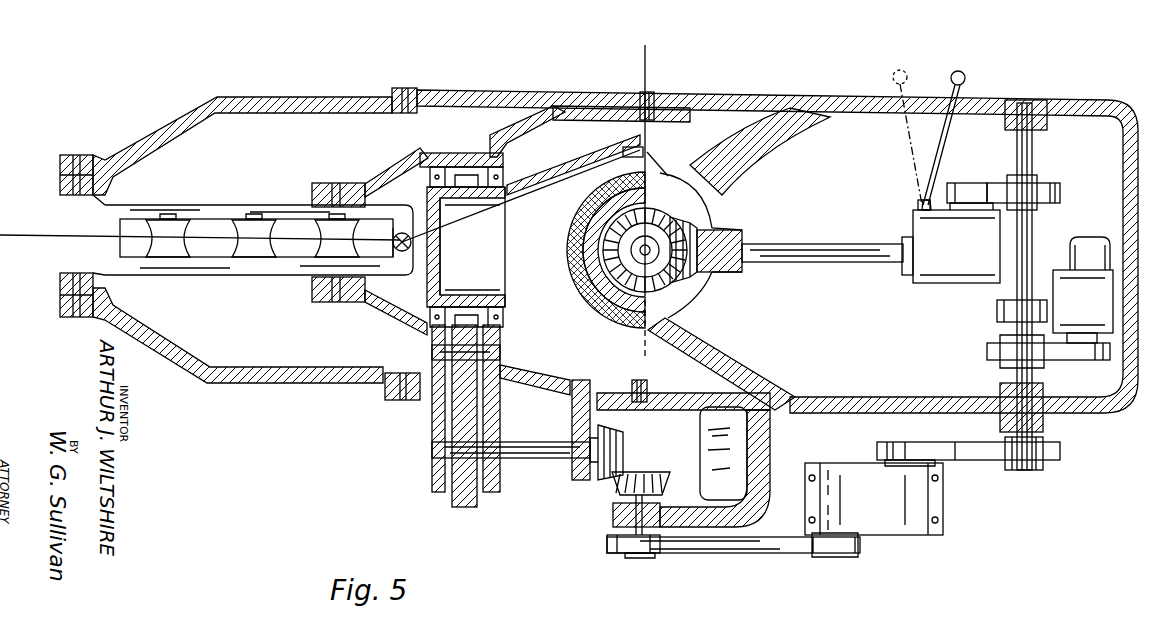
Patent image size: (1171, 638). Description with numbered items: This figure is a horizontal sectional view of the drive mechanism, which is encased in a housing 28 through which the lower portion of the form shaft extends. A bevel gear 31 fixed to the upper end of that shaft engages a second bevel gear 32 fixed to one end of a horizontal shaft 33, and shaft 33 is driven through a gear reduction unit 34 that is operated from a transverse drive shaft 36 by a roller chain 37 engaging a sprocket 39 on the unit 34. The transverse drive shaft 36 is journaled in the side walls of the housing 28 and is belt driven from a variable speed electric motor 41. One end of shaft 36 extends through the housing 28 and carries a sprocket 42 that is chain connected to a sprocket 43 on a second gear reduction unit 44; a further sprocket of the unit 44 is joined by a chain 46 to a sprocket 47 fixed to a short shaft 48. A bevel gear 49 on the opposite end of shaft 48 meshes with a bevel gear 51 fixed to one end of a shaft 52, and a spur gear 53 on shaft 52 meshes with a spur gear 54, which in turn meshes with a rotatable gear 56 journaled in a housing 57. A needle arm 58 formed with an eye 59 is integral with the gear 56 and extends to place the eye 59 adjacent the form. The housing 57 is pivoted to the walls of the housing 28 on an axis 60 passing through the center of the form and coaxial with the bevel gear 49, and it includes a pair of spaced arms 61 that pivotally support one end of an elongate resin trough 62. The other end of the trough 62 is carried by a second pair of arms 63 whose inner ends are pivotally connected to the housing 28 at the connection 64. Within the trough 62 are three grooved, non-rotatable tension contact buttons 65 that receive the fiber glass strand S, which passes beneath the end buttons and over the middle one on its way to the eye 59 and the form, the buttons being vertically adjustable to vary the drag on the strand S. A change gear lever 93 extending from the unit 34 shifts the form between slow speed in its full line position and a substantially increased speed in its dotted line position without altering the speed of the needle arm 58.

The fiber glass strand S is at (60, 236).
The housing 28 is at (808, 97).
The bevel gear 31 is at (690, 215).
The second bevel gear 32 is at (693, 228).
The horizontal shaft 33 is at (825, 260).
The gear reduction unit 34 is at (945, 268).
The transverse drive shaft 36 is at (1033, 237).
The roller chain 37 is at (995, 184).
The sprocket 39 is at (968, 184).
The variable speed electric motor 41 is at (1118, 310).
The sprocket 42 is at (1043, 462).
The sprocket 43 is at (918, 443).
The gear reduction unit 44 is at (850, 470).
The chain 46 is at (780, 553).
The sprocket 47 is at (660, 556).
The short shaft 48 is at (613, 523).
The bevel gear 49 is at (658, 475).
The bevel gear 51 is at (624, 452).
The shaft 52 is at (550, 446).
The spur gear 53 is at (465, 508).
The spur gear 54 is at (485, 352).
The rotatable gear 56 is at (472, 155).
The housing 57 is at (427, 338).
The needle arm 58 is at (580, 160).
The eye 59 is at (644, 148).
The axis 60 is at (643, 358).
The spaced arms 61 is at (393, 168).
The resin trough 62 is at (262, 275).
The second pair of arms 63 is at (312, 85).
The pivotal connection 64 is at (422, 84).
The tension contact buttons 65 is at (245, 230).
The change gear lever 93 is at (915, 62).